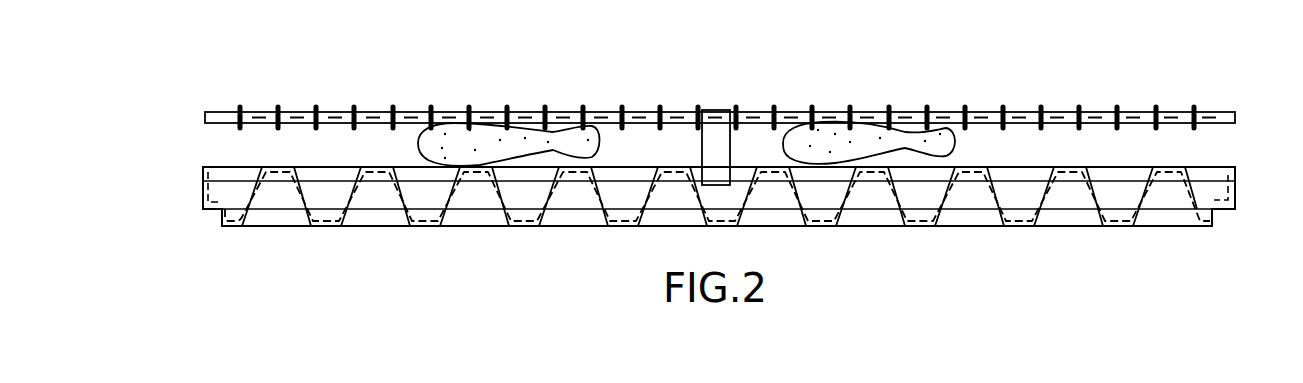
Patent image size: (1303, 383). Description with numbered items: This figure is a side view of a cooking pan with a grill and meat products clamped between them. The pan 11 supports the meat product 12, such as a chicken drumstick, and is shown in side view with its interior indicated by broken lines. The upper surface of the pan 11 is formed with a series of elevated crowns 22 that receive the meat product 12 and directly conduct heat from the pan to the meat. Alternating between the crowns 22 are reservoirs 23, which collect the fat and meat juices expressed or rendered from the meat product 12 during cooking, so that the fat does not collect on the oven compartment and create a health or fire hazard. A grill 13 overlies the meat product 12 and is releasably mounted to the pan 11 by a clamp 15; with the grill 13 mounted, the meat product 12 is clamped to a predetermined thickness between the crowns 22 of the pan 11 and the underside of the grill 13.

The pan 11 is at (233, 238).
The meat product 12 is at (955, 143).
The grill 13 is at (1213, 112).
The clamp 15 is at (718, 110).
The crowns 22 is at (277, 167).
The reservoirs 23 is at (431, 222).